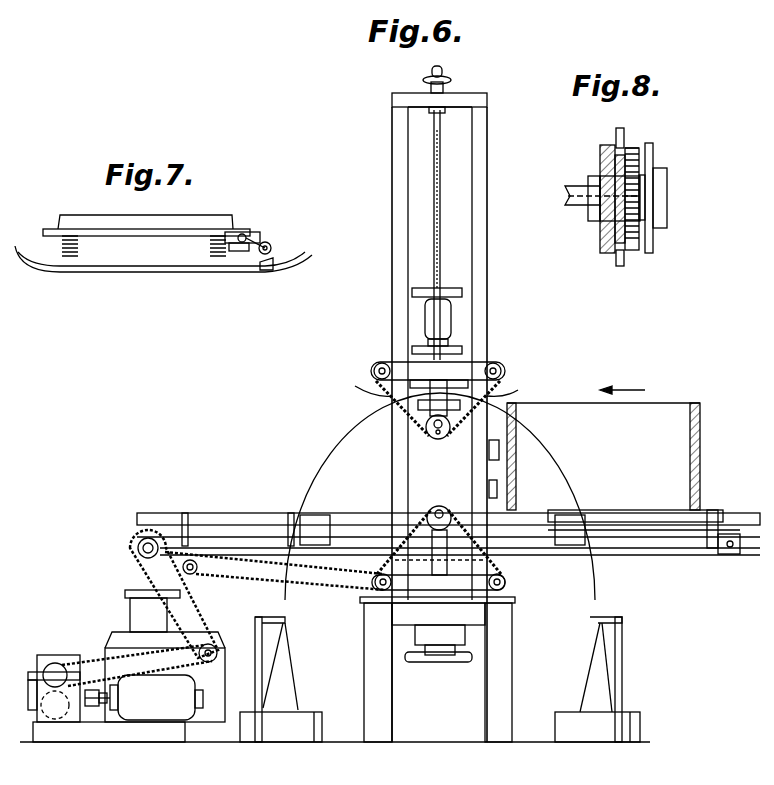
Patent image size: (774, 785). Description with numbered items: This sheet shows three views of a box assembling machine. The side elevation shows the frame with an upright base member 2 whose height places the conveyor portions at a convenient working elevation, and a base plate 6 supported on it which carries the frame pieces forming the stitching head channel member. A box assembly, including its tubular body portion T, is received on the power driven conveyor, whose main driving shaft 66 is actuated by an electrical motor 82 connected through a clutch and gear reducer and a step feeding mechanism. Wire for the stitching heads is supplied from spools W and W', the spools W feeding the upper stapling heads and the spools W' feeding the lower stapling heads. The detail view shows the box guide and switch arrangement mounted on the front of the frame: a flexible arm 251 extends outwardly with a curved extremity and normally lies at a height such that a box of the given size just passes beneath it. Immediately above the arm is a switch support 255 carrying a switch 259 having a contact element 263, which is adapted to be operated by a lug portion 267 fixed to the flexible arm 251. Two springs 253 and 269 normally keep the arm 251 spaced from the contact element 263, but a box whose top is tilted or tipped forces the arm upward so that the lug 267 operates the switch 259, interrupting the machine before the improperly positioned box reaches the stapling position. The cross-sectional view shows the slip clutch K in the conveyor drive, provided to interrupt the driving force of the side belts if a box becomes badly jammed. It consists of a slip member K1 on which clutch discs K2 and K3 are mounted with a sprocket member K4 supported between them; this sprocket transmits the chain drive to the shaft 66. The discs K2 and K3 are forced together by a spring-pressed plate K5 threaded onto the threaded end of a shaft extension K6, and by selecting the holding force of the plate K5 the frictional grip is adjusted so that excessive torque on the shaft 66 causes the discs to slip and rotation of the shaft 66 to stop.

In FIG. 6, the base member 2 is at (510, 668).
In FIG. 6, the base plate 6 is at (510, 598).
In FIG. 6, the electrical motor 82 is at (150, 700).
In FIG. 6, the spool W is at (592, 679).
In FIG. 6, the spool W' is at (285, 679).
In FIG. 6, the tubular body portion T is at (700, 452).
In FIG. 6, the flexible arm 251 is at (505, 400).
In FIG. 7, the flexible arm 251 is at (140, 268).
In FIG. 7, the spring 253 is at (82, 256).
In FIG. 7, the switch support 255 is at (243, 232).
In FIG. 7, the switch 259 is at (238, 252).
In FIG. 6, the contact element 263 is at (498, 388).
In FIG. 7, the contact element 263 is at (272, 246).
In FIG. 6, the lug portion 267 is at (500, 392).
In FIG. 7, the lug portion 267 is at (272, 272).
In FIG. 7, the spring 269 is at (212, 244).
In FIG. 8, the main driving shaft 66 is at (568, 196).
In FIG. 8, the slip clutch K is at (680, 187).
In FIG. 8, the slip member K1 is at (606, 224).
In FIG. 8, the clutch disc K2 is at (610, 145).
In FIG. 8, the clutch disc K3 is at (633, 150).
In FIG. 8, the sprocket member K4 is at (620, 150).
In FIG. 8, the spring-pressed plate K5 is at (654, 150).
In FIG. 8, the shaft extension K6 is at (665, 222).